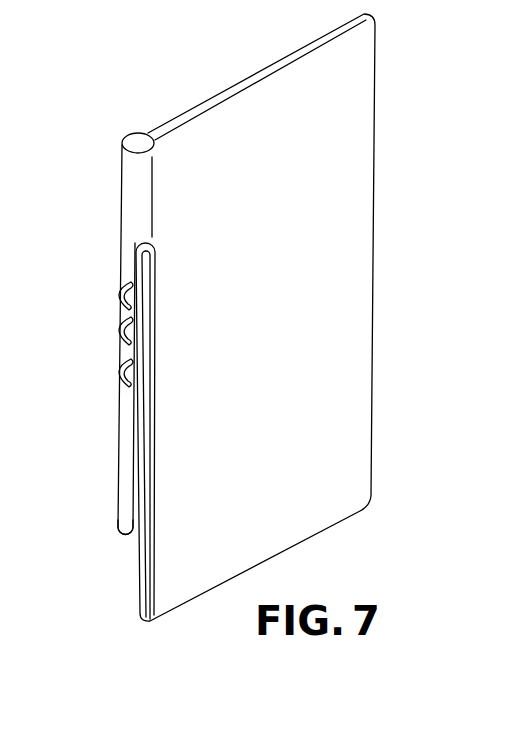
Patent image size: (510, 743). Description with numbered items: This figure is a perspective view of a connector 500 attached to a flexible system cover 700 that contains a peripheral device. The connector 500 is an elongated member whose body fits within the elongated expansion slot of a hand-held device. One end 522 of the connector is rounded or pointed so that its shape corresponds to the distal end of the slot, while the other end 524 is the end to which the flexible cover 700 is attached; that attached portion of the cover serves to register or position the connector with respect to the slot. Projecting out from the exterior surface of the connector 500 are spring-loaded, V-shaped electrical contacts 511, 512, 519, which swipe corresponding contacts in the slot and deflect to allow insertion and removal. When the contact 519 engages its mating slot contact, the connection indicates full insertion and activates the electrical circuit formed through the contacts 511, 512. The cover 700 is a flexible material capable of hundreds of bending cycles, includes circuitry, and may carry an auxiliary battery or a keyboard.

The flexible system cover 700 is at (373, 258).
The connector 500 is at (118, 457).
The end of the connector 524 is at (122, 178).
The end of the connector 522 is at (122, 532).
The electrical contact 511 is at (113, 291).
The electrical contact 512 is at (113, 328).
The electrical contact 519 is at (113, 365).